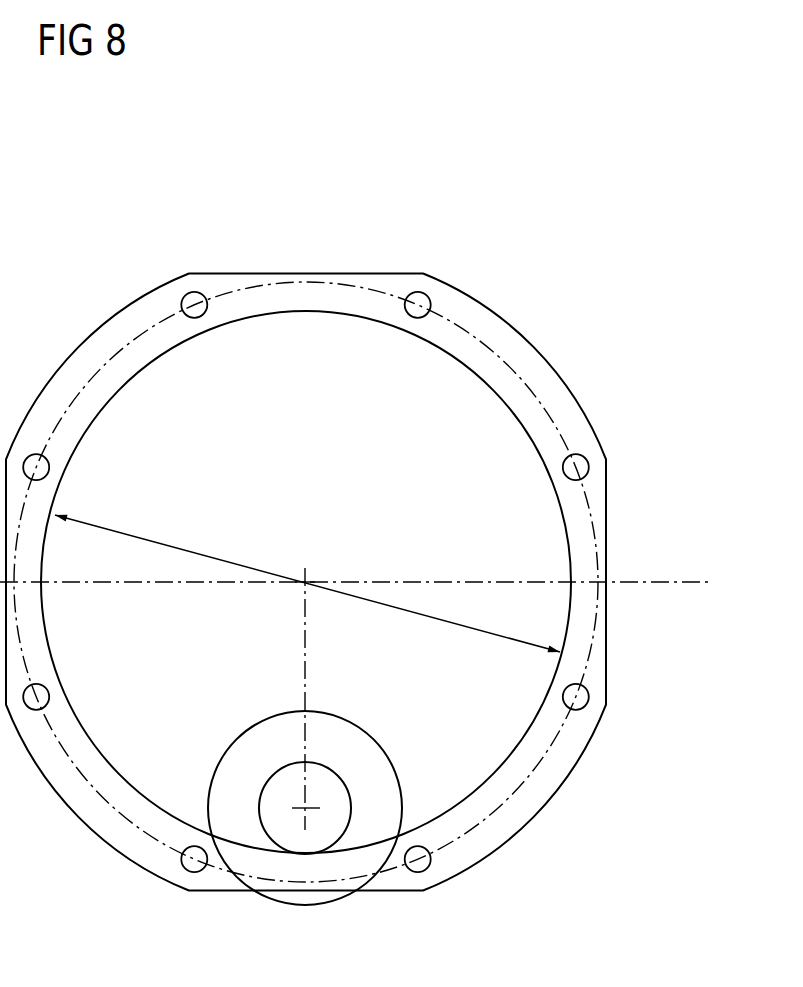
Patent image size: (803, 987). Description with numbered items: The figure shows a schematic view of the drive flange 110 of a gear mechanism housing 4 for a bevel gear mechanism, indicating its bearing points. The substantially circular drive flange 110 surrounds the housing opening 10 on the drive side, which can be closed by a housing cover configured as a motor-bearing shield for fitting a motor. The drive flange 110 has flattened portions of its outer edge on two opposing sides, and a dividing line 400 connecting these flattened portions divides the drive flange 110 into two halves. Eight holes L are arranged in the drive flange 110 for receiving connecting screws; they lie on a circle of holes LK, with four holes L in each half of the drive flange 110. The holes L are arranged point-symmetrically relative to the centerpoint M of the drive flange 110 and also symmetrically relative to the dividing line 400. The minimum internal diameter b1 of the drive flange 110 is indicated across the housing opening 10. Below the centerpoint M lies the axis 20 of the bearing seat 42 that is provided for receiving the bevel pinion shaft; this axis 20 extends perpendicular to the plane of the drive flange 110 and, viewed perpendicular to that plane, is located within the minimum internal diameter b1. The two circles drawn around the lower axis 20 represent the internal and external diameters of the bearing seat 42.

The gear mechanism housing 4 is at (90, 309).
The housing opening 10 is at (280, 330).
The drive flange 110 is at (490, 328).
The circle of holes LK is at (530, 386).
The holes L is at (586, 460).
The dividing line 400 is at (691, 580).
The centerpoint M is at (303, 577).
The minimum internal diameter b1 is at (132, 532).
The axis 20 is at (308, 810).
The bearing seat 42 is at (347, 897).